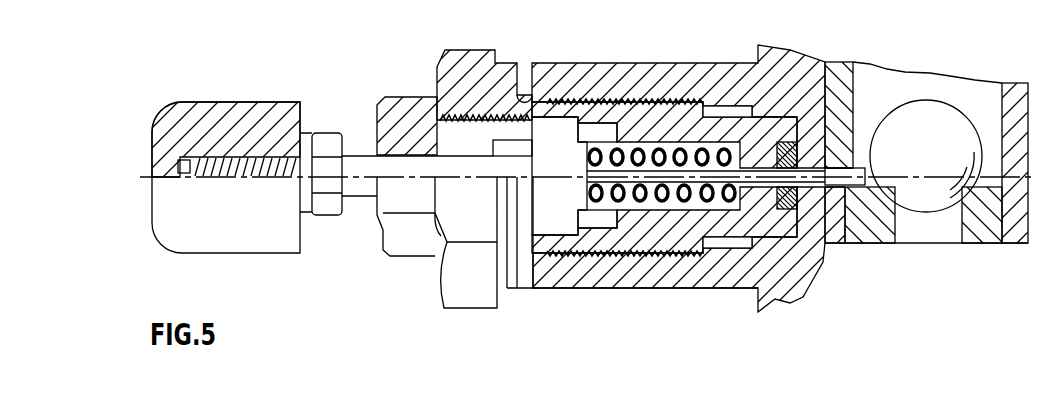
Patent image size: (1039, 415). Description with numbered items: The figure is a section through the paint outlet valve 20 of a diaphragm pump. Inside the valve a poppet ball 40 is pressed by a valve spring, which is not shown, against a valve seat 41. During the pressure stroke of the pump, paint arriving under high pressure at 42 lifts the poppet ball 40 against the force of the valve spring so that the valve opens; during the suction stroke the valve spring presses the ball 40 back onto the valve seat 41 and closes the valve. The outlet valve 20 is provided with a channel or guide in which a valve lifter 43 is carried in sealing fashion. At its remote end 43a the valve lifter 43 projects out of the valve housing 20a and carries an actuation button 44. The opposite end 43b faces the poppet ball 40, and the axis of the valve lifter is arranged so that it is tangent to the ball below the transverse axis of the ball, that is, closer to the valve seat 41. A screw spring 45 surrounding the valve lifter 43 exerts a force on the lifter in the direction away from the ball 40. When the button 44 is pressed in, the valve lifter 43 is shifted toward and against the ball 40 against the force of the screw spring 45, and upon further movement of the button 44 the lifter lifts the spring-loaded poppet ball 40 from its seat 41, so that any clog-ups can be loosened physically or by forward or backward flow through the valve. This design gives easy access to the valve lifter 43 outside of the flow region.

The paint outlet valve 20 is at (584, 307).
The valve housing 20a is at (465, 48).
The poppet ball 40 is at (915, 197).
The valve seat 41 is at (995, 217).
The paint inlet region 42 is at (942, 227).
The valve lifter 43 is at (805, 232).
The remote end of the valve lifter 43a is at (346, 136).
The opposite end of the valve lifter 43b is at (860, 165).
The actuation button 44 is at (272, 225).
The screw spring 45 is at (658, 192).